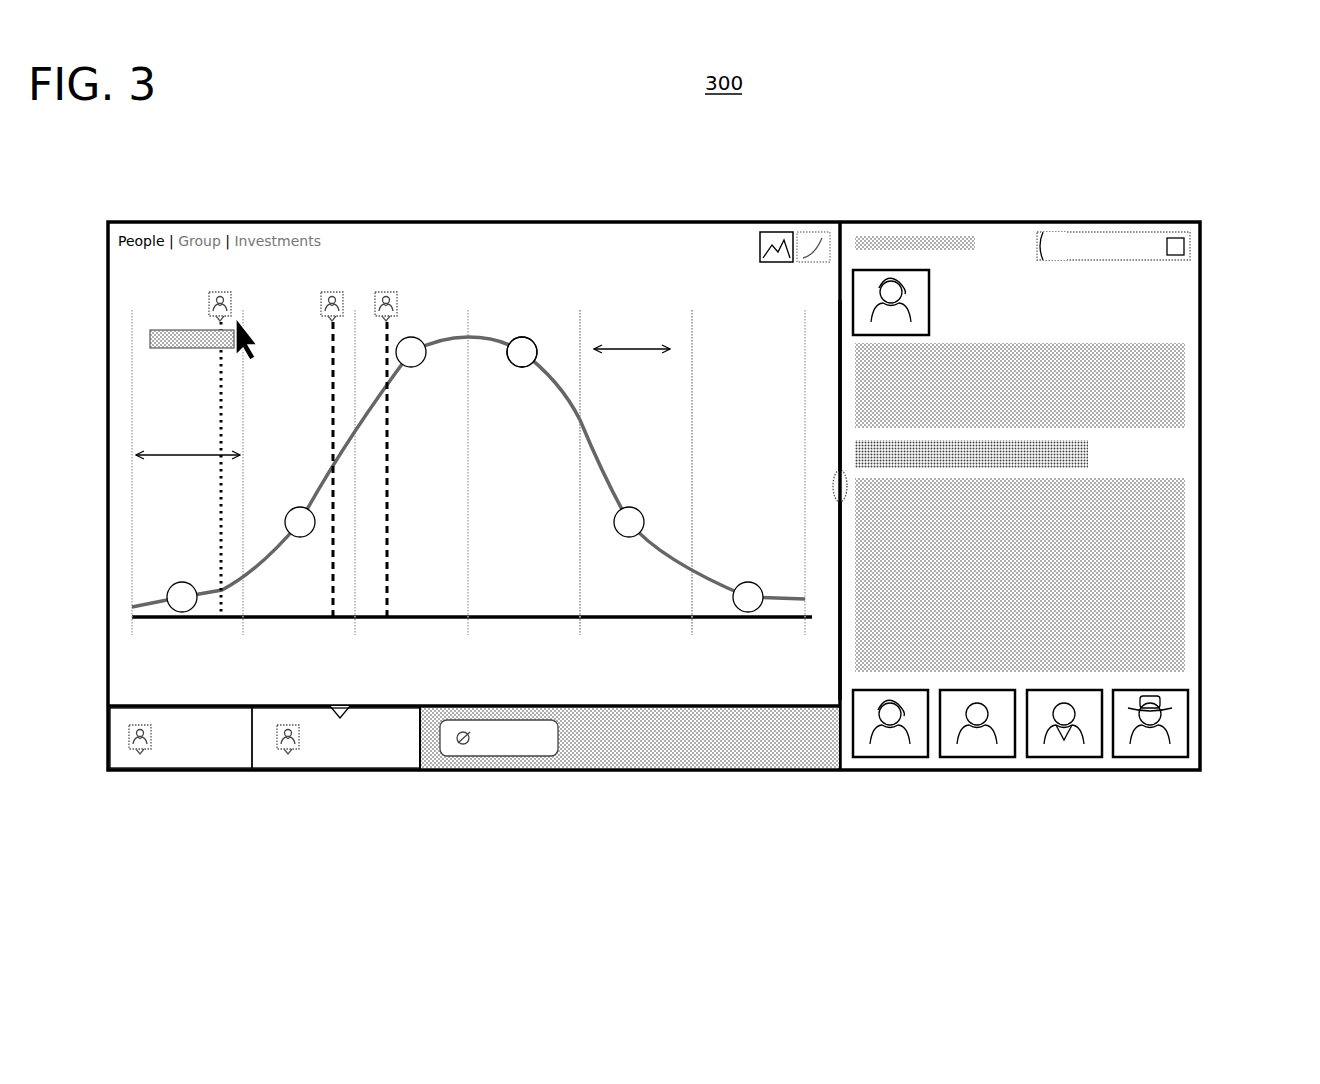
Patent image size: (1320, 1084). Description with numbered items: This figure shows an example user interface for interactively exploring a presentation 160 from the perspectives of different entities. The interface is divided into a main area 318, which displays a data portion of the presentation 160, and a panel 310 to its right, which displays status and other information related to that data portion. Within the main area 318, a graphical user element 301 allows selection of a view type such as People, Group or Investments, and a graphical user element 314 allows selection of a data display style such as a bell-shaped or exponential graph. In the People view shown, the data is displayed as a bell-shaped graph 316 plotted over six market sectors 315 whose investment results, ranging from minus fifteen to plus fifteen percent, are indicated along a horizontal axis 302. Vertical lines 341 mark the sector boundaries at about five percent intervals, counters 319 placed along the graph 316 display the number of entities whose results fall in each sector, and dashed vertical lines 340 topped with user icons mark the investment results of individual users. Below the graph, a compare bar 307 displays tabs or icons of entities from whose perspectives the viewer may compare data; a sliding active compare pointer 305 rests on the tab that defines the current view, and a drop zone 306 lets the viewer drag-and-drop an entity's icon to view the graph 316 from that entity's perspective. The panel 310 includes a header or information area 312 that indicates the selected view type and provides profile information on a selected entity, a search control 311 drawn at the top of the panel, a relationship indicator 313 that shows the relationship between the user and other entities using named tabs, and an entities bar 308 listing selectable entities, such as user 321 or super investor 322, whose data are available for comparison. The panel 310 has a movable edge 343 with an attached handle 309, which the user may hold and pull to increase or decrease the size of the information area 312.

The graphical user element 301 is at (78, 262).
The horizontal axis 302 is at (205, 617).
The active compare pointer 305 is at (305, 732).
The drop zone 306 is at (443, 752).
The compare bar 307 is at (690, 762).
The entities bar 308 is at (1084, 766).
The handle 309 is at (830, 490).
The panel 310 is at (1200, 225).
The search box 311 is at (1043, 258).
The information area 312 is at (1150, 672).
The relationship indicator 313 is at (877, 248).
The graphical user element 314 is at (792, 262).
The market sectors 315 is at (142, 455).
The bell-shaped graph 316 is at (553, 385).
The main area 318 is at (475, 243).
The counters 319 is at (512, 345).
The user 321 is at (973, 760).
The super investor 322 is at (880, 760).
The dashed vertical lines 340 is at (220, 505).
The vertical lines 341 is at (582, 410).
The movable edge 343 is at (843, 525).
The presentation 160 is at (616, 852).